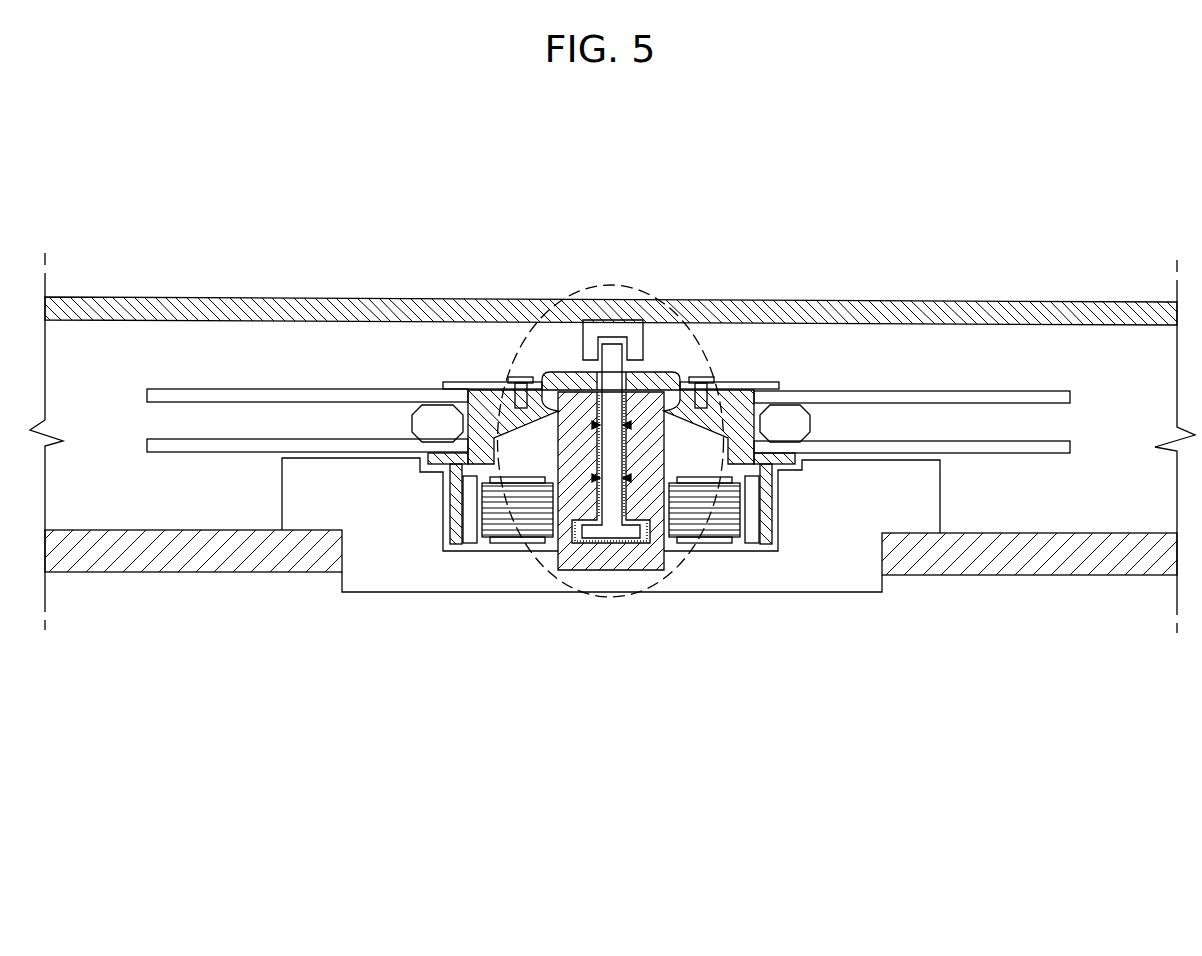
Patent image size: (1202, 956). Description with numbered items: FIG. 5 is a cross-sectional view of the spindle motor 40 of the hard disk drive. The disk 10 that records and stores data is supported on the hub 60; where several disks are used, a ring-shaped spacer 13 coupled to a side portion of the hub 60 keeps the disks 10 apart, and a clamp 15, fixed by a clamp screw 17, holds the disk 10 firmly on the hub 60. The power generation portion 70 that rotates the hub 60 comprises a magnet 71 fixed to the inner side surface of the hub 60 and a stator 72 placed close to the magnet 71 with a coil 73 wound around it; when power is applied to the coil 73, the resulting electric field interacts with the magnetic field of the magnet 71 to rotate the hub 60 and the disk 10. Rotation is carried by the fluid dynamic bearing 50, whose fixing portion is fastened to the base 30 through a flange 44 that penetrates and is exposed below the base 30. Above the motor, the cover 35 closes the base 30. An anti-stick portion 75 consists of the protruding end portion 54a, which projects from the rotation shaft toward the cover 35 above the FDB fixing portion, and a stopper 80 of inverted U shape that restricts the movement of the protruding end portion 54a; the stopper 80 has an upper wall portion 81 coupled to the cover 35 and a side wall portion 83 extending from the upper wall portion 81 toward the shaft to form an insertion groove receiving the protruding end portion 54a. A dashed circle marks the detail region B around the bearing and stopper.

The disk 10 is at (222, 443).
The spacer 13 is at (432, 412).
The clamp 15 is at (483, 392).
The clamp screw 17 is at (521, 382).
The base 30 is at (163, 554).
The cover 35 is at (160, 300).
The spindle motor 40 is at (618, 712).
The flange 44 is at (382, 568).
The fluid dynamic bearing 50 is at (622, 588).
The protruding end portion 54a is at (565, 302).
The hub 60 is at (770, 485).
The power generation portion 70 is at (614, 590).
The magnet 71 is at (753, 536).
The stator 72 is at (715, 532).
The coil 73 is at (727, 492).
The anti-stick portion 75 is at (570, 162).
The stopper 80 is at (618, 213).
The upper wall portion 81 is at (615, 330).
The side wall portion 83 is at (633, 350).
The detail region B is at (547, 582).